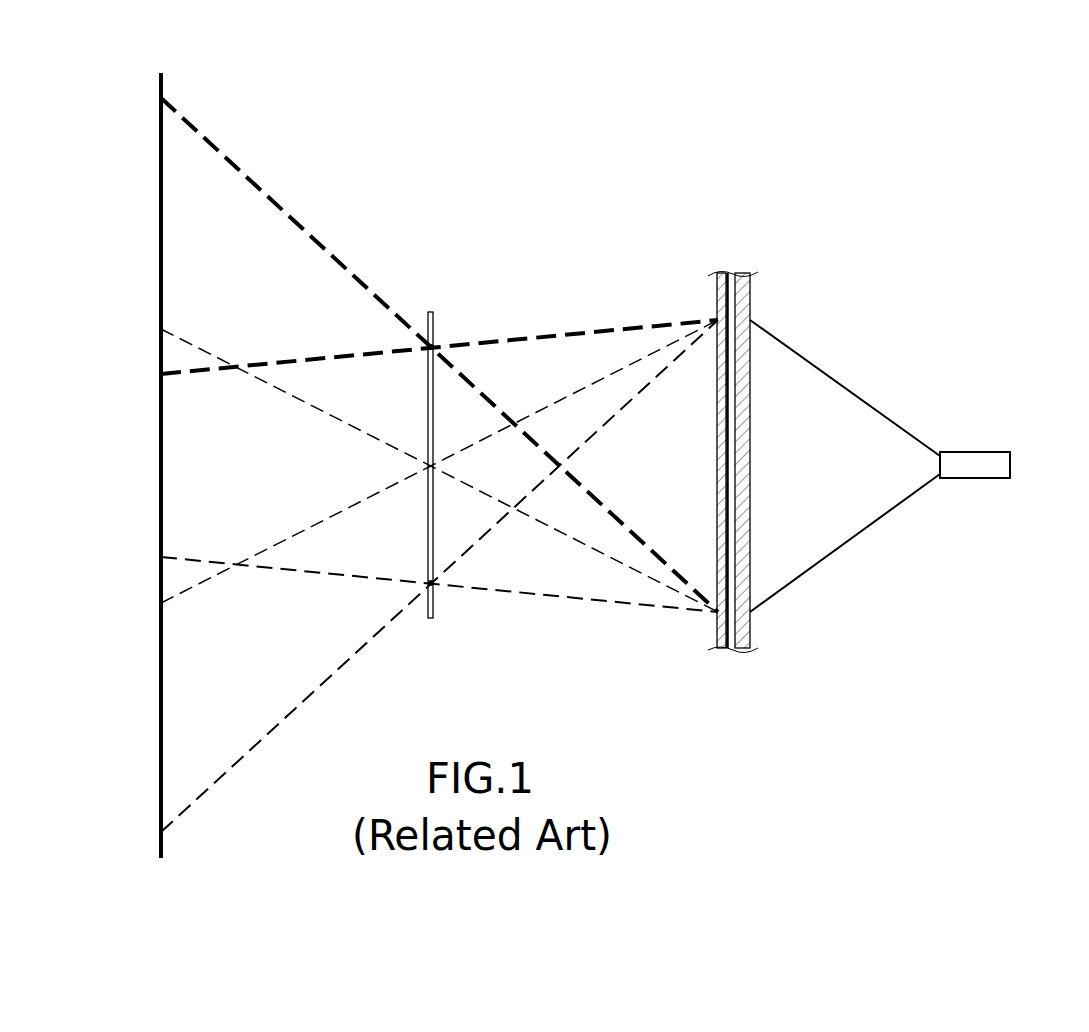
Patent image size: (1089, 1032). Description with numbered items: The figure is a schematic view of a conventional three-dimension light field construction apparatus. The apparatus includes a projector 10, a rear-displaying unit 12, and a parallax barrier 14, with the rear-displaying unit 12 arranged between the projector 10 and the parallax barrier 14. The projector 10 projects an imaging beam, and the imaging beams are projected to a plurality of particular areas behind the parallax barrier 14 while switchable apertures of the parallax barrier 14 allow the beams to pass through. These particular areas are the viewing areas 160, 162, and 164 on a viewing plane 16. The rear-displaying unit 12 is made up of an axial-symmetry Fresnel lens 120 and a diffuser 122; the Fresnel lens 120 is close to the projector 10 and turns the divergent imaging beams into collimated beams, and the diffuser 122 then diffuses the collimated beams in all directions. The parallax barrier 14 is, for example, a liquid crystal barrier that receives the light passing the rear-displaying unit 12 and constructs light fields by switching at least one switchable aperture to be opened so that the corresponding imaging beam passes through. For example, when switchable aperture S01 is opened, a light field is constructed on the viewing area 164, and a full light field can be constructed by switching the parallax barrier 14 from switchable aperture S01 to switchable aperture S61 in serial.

The projector 10 is at (997, 468).
The rear-displaying unit 12 is at (737, 398).
The axial-symmetry Fresnel lens 120 is at (788, 423).
The diffuser 122 is at (717, 293).
The parallax barrier 14 is at (428, 322).
The viewing plane 16 is at (163, 83).
The viewing area 160 is at (132, 375).
The viewing area 162 is at (147, 605).
The viewing area 164 is at (132, 562).
The switchable aperture S61 is at (436, 347).
The switchable aperture S01 is at (434, 587).